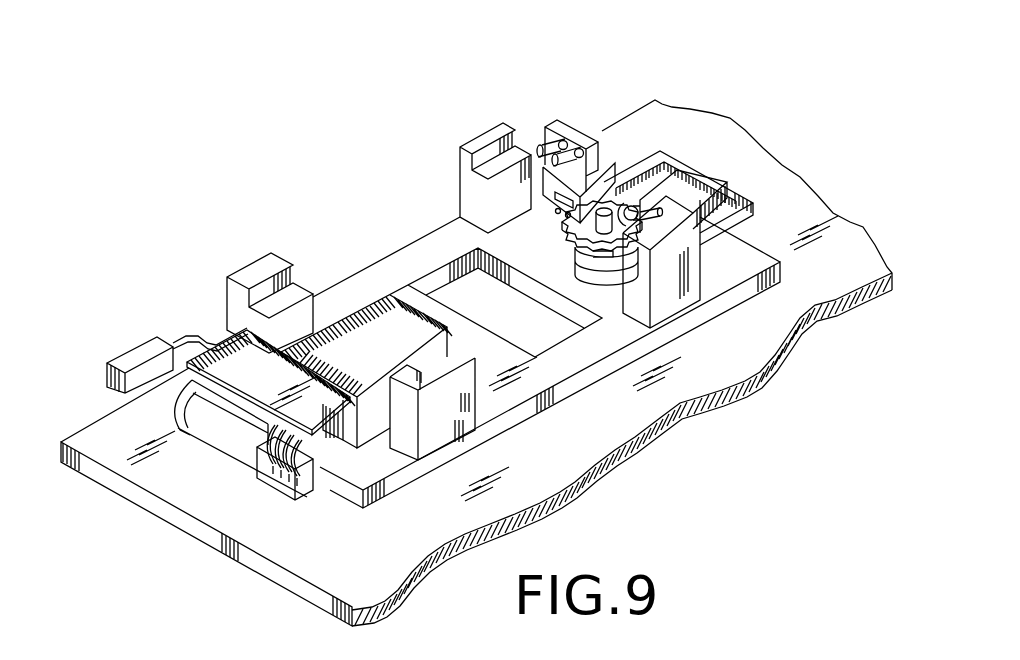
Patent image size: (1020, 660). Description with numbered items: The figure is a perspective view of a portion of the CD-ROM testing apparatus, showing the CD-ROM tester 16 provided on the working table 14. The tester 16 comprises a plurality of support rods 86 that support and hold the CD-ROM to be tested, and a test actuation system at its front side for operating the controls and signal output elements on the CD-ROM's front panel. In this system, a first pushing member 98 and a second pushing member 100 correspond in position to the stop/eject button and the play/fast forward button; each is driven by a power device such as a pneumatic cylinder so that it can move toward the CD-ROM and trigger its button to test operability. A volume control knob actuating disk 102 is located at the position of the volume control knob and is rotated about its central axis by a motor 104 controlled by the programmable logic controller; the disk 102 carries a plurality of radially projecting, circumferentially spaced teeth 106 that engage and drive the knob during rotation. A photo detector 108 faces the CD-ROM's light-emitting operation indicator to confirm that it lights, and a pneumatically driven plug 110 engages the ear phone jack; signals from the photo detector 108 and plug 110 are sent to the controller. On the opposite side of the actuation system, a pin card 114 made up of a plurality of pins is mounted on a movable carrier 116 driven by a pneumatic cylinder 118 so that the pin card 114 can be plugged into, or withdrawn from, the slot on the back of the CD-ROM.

The working table 14 is at (405, 547).
The CD-ROM tester 16 is at (206, 463).
The support rods 86 is at (490, 135).
The first pushing member 98 is at (543, 145).
The second pushing member 100 is at (562, 113).
The volume control knob actuating disk 102 is at (596, 226).
The motor 104 is at (652, 330).
The teeth 106 is at (590, 245).
The photo detector 108 is at (622, 203).
The plug 110 is at (660, 212).
The pin card 114 is at (267, 333).
The movable carrier 116 is at (367, 328).
The pneumatic cylinder 118 is at (150, 347).